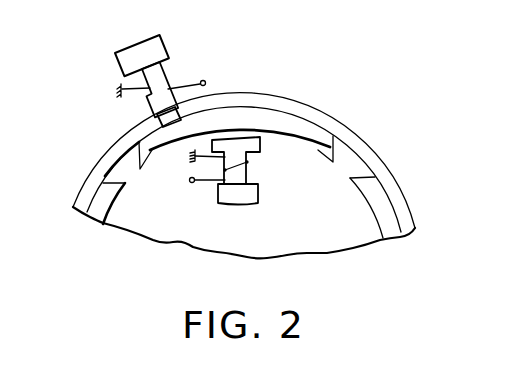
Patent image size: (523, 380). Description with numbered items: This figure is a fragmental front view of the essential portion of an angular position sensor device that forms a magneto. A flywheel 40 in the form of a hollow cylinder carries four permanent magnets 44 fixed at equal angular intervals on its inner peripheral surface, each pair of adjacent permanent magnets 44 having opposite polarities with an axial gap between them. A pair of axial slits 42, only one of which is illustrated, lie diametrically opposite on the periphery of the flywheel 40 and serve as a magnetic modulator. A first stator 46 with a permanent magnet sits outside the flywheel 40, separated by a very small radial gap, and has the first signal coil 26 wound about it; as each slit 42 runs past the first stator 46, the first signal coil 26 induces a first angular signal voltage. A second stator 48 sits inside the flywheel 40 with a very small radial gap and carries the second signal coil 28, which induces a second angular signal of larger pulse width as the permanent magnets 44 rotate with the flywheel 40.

The flywheel 40 is at (300, 104).
The axial slits 42 is at (158, 120).
The permanent magnets 44 is at (118, 182).
The first stator 46 is at (127, 75).
The first signal coil 26 is at (163, 71).
The second signal coil 28 is at (248, 177).
The second stator 48 is at (260, 197).